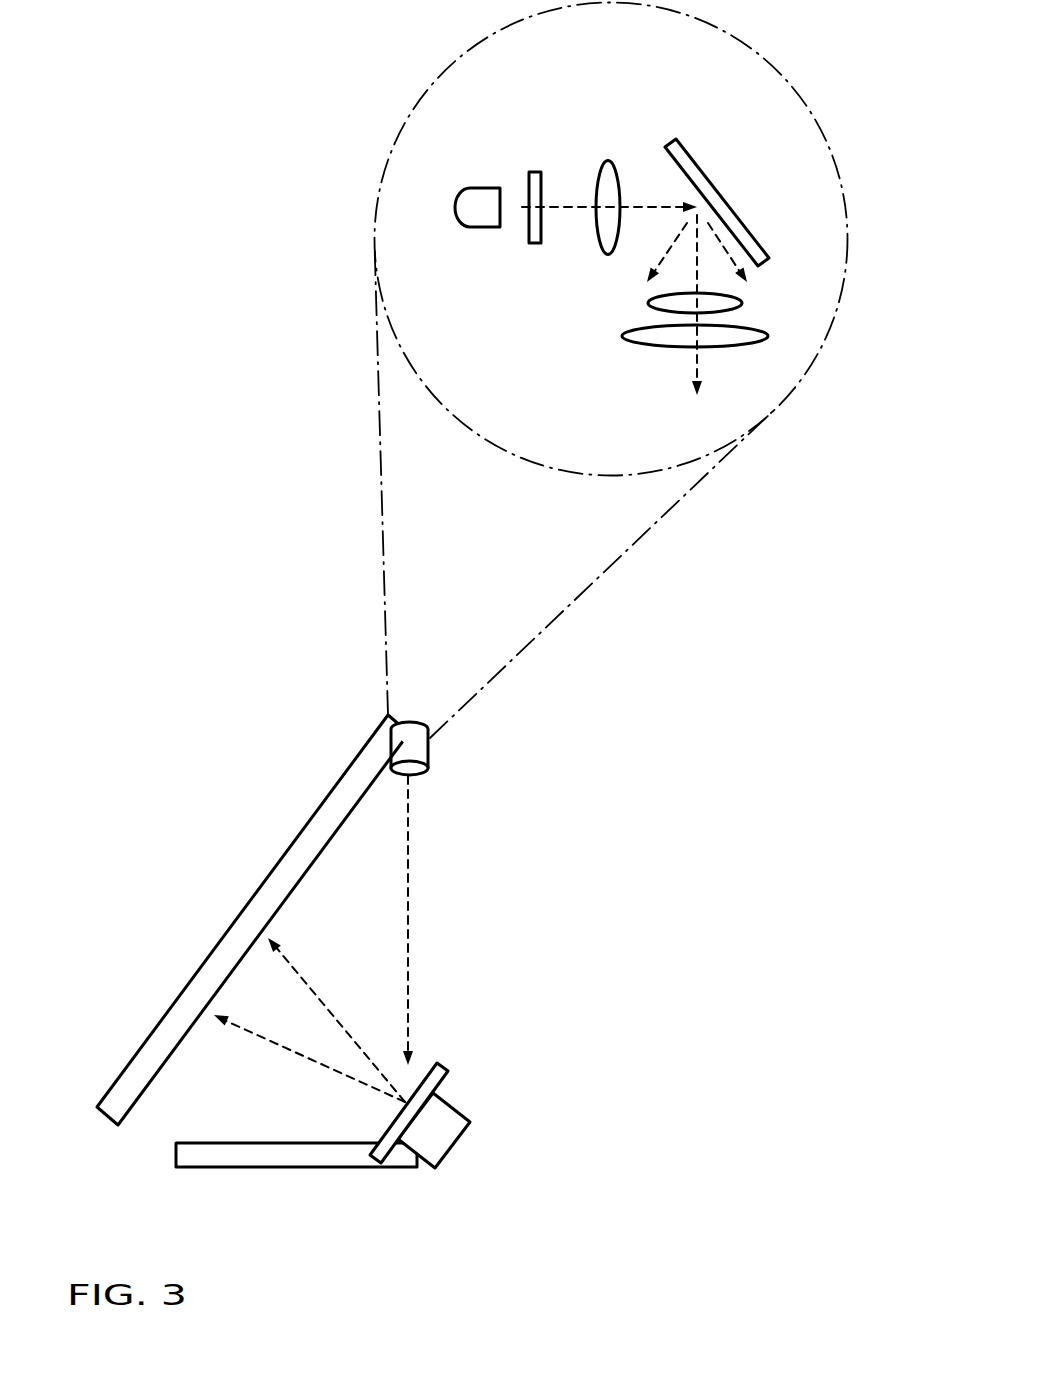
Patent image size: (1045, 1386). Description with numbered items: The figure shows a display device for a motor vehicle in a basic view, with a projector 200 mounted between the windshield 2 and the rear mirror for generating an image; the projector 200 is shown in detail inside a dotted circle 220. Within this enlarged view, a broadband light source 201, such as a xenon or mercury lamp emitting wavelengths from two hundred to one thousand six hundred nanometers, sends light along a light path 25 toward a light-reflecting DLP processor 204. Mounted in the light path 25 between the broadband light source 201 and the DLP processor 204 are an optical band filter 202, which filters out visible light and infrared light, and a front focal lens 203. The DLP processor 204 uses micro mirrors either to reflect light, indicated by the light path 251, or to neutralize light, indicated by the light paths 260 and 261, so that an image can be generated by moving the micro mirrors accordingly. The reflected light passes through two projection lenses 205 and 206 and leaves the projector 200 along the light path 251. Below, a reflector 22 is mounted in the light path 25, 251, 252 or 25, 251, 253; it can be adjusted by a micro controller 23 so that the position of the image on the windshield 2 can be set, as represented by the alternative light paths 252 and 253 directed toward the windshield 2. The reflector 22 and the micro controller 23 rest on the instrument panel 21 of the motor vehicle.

The windshield 2 is at (328, 819).
The instrument panel 21 is at (359, 1159).
The reflector 22 is at (439, 1075).
The micro controller 23 is at (452, 1123).
The light path 25 is at (515, 208).
The projector 200 is at (405, 752).
The broadband light source 201 is at (479, 207).
The optical band filter 202 is at (535, 190).
The front focal lens 203 is at (609, 189).
The DLP processor 204 is at (701, 186).
The projection lens 205 is at (717, 303).
The projection lens 206 is at (716, 336).
The dotted circle 220 is at (787, 82).
The light path 251 is at (697, 364).
The light path 252 is at (298, 973).
The light path 253 is at (307, 1058).
The light path 260 is at (727, 252).
The light path 261 is at (668, 249).